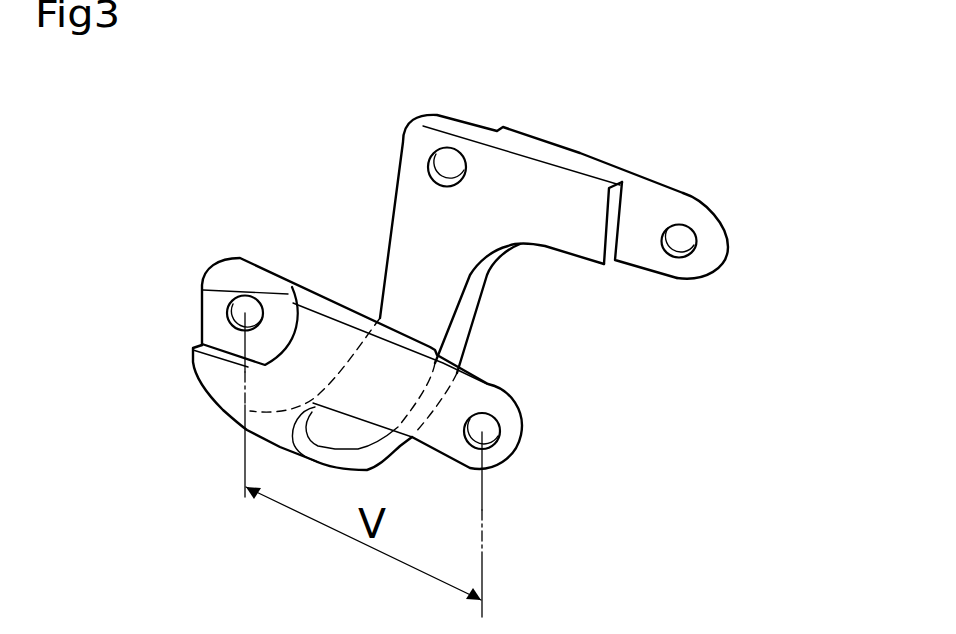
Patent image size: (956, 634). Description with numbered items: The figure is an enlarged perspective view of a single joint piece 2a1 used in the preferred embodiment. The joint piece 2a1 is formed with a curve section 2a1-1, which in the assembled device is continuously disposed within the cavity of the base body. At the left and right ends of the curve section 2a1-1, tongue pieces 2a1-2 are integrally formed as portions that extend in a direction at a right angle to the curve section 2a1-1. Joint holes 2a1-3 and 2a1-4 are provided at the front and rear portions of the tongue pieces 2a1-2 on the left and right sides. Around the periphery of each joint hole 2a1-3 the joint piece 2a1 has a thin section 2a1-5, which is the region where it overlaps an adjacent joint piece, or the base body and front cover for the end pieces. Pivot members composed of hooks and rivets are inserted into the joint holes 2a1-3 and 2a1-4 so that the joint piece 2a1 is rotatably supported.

The joint piece 2a1 is at (485, 308).
The curve section 2a1-1 is at (400, 290).
The tongue piece 2a1-2 is at (443, 453).
The joint hole 2a1-3 is at (685, 254).
The joint hole 2a1-4 is at (449, 150).
The thin section 2a1-5 is at (643, 215).